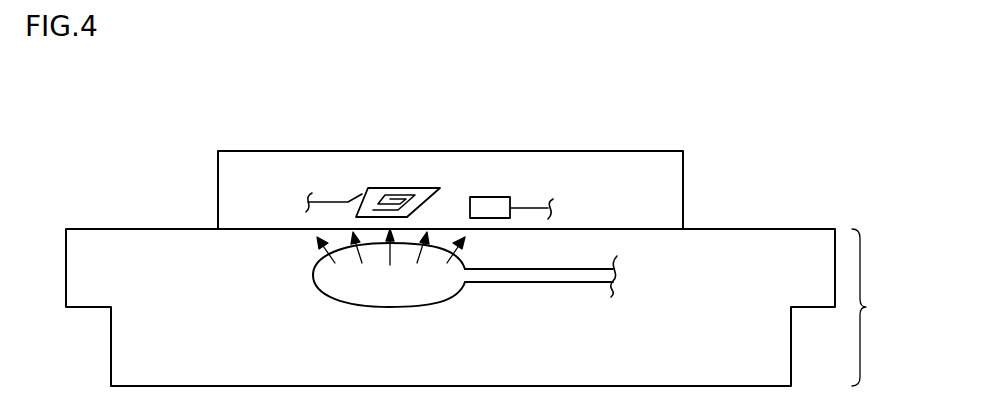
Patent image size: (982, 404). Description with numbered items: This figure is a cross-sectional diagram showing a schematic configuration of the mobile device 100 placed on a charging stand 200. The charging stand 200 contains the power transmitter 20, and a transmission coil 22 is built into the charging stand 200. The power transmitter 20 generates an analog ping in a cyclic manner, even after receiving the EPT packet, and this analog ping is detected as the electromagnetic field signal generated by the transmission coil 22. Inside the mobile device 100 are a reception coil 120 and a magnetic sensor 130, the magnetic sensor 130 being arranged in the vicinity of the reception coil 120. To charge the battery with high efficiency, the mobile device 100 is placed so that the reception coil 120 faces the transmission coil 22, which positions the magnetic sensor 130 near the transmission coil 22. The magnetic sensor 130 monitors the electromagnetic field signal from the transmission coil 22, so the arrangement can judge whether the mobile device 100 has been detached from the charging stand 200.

The charging stand 200 is at (116, 222).
The power transmitter 20 is at (878, 307).
The mobile device 100 is at (638, 150).
The reception coil 120 is at (388, 170).
The magnetic sensor 130 is at (492, 197).
The transmission coil 22 is at (314, 305).